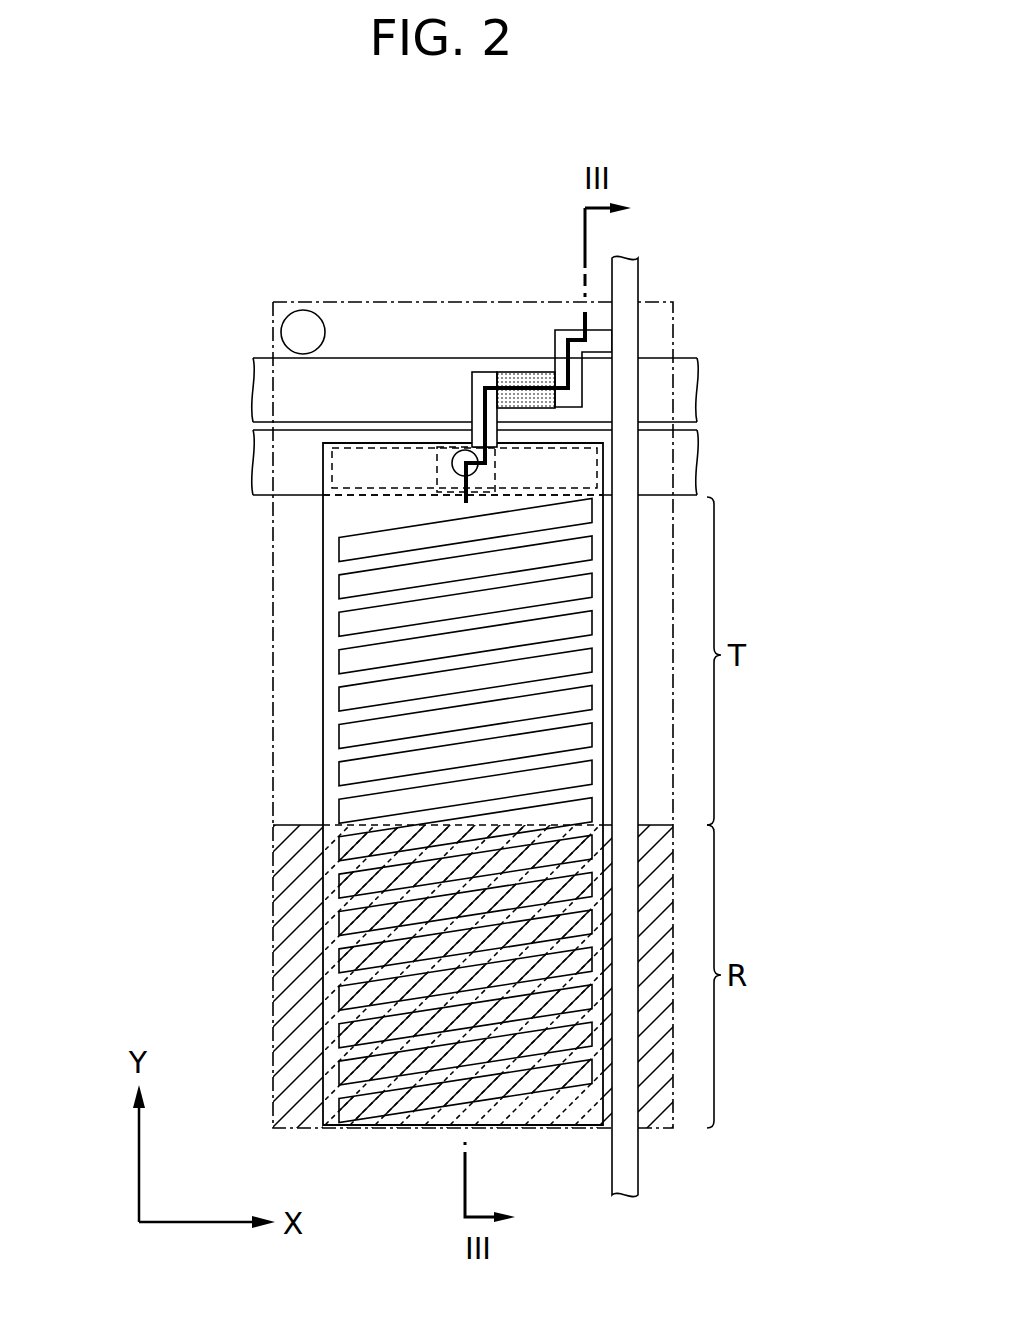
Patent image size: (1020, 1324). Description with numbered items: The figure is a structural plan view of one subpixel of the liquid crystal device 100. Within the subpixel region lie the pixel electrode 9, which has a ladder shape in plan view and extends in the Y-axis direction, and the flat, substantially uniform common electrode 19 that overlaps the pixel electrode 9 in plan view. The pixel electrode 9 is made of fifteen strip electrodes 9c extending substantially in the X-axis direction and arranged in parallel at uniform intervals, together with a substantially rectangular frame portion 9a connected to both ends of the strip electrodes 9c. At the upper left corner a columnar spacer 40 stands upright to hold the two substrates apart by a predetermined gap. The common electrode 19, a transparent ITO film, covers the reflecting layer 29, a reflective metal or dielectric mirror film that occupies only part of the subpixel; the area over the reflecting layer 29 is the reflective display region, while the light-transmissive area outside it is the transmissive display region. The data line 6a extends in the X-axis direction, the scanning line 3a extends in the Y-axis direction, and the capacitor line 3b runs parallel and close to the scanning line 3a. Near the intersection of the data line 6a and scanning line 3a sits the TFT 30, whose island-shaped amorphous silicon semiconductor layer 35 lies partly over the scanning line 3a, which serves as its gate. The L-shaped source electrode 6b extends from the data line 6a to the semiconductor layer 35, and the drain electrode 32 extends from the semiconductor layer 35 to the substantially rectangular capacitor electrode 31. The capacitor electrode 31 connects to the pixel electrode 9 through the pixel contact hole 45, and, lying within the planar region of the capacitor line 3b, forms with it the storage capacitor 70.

The liquid crystal device 100 is at (755, 289).
The columnar spacer 40 is at (303, 320).
The TFT 30 is at (506, 354).
The drain electrode 32 is at (482, 375).
The semiconductor layer 35 is at (533, 373).
The source electrode 6b is at (562, 335).
The data line 6a is at (638, 1170).
The scanning line 3a is at (263, 358).
The capacitor line 3b is at (263, 488).
The capacitor electrode 31 is at (323, 467).
The storage capacitor 70 is at (308, 480).
The pixel contact hole 45 is at (452, 463).
The pixel electrode 9 is at (403, 784).
The frame portion 9a is at (350, 523).
The strip electrodes 9c is at (393, 707).
The common electrode 19 is at (272, 797).
The reflecting layer 29 is at (273, 935).